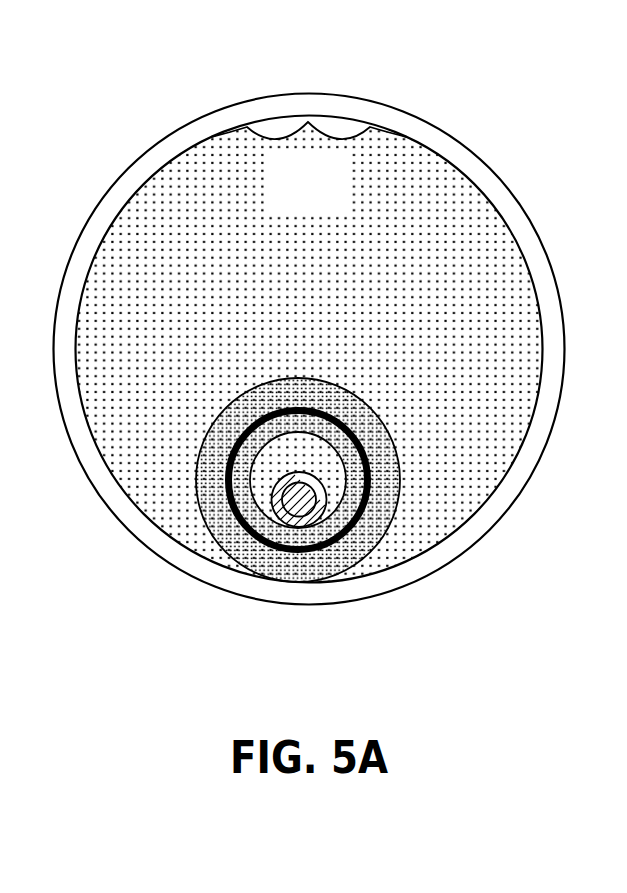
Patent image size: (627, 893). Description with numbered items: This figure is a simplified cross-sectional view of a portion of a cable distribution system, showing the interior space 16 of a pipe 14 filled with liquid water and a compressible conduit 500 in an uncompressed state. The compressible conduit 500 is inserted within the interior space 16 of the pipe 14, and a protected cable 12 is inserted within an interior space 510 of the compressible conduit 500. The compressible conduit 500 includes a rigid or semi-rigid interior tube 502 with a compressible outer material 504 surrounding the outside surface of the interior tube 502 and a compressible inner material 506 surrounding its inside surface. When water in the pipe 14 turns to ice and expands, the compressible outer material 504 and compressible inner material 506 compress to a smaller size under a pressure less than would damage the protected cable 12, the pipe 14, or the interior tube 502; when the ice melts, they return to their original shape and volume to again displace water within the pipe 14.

The pipe 14 is at (152, 154).
The interior space 16 is at (480, 226).
The compressible conduit 500 is at (274, 422).
The compressible outer material 504 is at (255, 391).
The interior tube 502 is at (232, 436).
The compressible inner material 506 is at (227, 487).
The protected cable 12 is at (301, 472).
The interior space of compressible conduit 510 is at (340, 472).